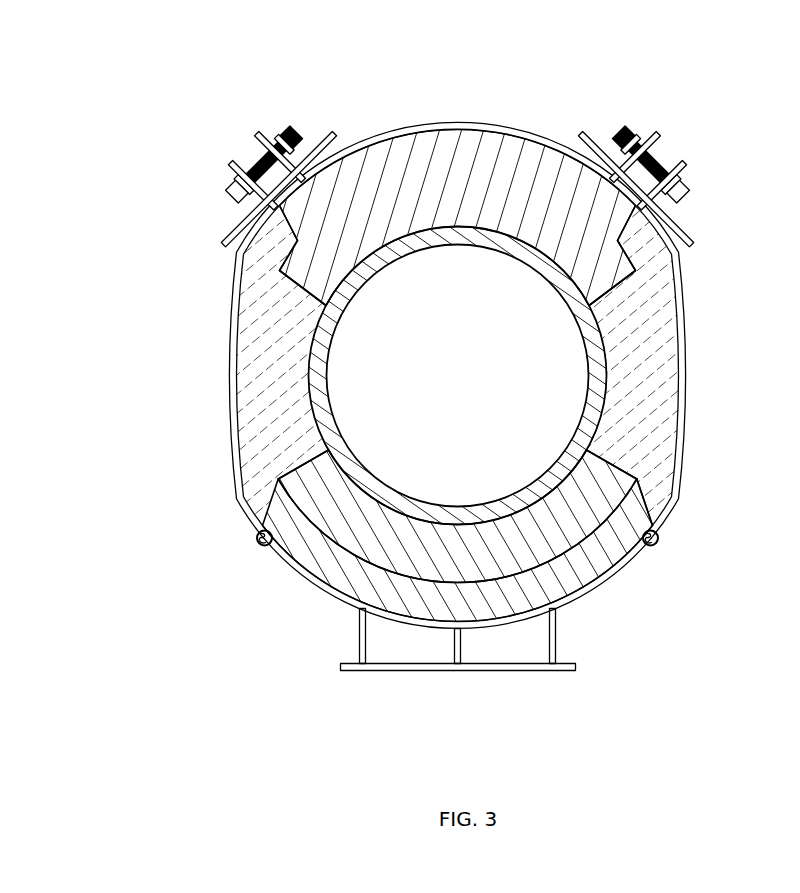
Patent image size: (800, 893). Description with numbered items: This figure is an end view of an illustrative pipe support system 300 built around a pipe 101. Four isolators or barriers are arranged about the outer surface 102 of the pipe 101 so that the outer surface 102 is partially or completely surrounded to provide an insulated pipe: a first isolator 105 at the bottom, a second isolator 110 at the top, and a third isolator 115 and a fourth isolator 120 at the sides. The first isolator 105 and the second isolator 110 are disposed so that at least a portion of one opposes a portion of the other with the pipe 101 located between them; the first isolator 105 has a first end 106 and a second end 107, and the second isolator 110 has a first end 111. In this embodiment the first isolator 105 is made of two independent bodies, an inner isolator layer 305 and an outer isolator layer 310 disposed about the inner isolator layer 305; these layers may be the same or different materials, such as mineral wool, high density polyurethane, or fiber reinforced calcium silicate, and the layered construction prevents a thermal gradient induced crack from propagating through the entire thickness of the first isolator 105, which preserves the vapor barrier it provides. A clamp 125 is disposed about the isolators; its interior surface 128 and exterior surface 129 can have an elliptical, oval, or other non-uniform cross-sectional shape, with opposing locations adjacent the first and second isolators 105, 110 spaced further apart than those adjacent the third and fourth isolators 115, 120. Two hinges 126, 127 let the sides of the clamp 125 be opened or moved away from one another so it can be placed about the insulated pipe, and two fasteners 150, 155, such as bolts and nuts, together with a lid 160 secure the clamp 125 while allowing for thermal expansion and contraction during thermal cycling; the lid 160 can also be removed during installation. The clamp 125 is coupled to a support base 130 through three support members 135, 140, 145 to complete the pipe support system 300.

The pipe support system 300 is at (156, 50).
The pipe 101 is at (459, 240).
The outer surface 102 is at (303, 391).
The first isolator 105 is at (350, 577).
The first end 106 is at (275, 263).
The second end 107 is at (650, 260).
The second isolator 110 is at (463, 157).
The first end 111 is at (268, 481).
The third isolator 115 is at (265, 360).
The fourth isolator 120 is at (495, 375).
The clamp 125 is at (597, 580).
The hinge 126 is at (255, 539).
The hinge 127 is at (657, 538).
The interior surface 128 is at (670, 382).
The exterior surface 129 is at (633, 556).
The support base 130 is at (576, 666).
The support member 135 is at (356, 633).
The support member 140 is at (452, 643).
The support member 145 is at (556, 622).
The fastener 150 is at (252, 133).
The fastener 155 is at (656, 136).
The lid 160 is at (373, 133).
The inner isolator layer 305 is at (600, 478).
The outer isolator layer 310 is at (604, 537).